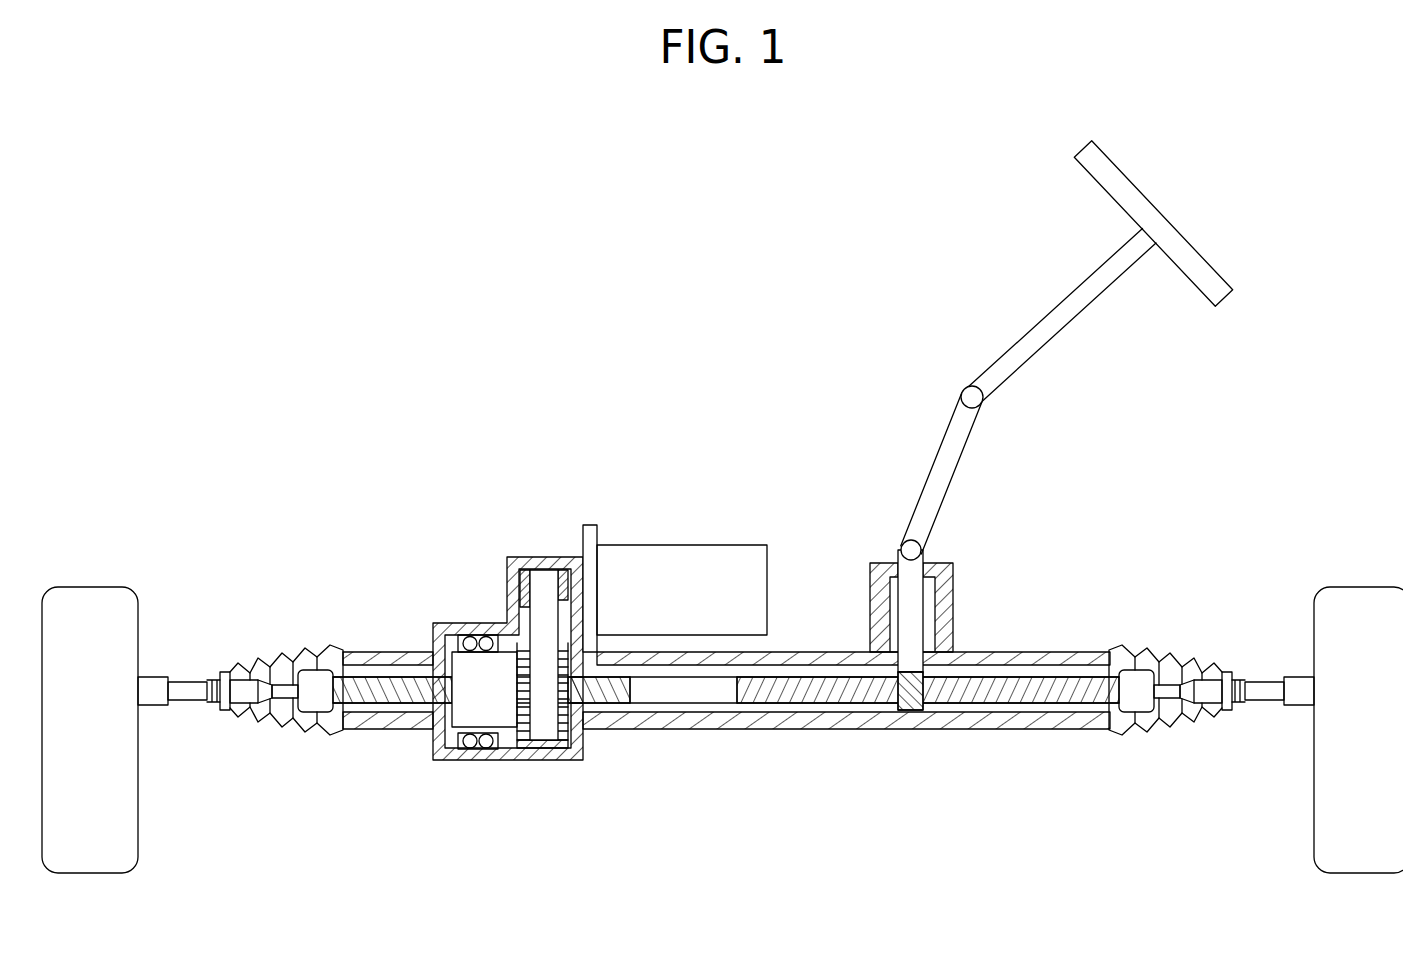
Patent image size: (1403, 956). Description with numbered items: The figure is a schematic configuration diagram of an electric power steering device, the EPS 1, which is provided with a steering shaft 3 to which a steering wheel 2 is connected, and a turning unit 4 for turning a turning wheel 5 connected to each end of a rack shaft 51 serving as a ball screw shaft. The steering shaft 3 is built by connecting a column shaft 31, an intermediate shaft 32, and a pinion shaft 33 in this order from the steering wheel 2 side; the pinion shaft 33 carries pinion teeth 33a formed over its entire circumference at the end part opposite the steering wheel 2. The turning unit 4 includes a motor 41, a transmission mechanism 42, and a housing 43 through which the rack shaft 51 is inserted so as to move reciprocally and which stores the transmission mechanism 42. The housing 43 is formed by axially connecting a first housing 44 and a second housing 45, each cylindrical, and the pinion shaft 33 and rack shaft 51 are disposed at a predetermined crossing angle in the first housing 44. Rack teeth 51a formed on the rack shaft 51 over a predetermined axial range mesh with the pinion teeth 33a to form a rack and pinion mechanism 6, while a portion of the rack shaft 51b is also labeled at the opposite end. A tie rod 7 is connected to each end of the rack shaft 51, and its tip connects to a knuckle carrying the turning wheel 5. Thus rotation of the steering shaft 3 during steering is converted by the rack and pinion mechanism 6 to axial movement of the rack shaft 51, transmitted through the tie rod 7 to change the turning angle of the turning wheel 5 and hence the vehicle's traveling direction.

The electric power steering device 1 is at (553, 302).
The steering wheel 2 is at (1160, 210).
The steering shaft 3 is at (975, 506).
The column shaft 31 is at (987, 362).
The intermediate shaft 32 is at (937, 450).
The pinion shaft 33 is at (897, 629).
The pinion teeth 33a is at (908, 712).
The turning unit 4 is at (579, 604).
The motor 41 is at (680, 545).
The transmission mechanism 42 is at (438, 607).
The housing 43 is at (534, 603).
The first housing 44 is at (550, 621).
The second housing 45 is at (524, 556).
The turning wheel 5 is at (92, 587).
The rack shaft 51 is at (680, 705).
The rack teeth 51a is at (1025, 705).
The second rack end portion 51b is at (393, 712).
The rack and pinion mechanism 6 is at (895, 712).
The tie rod 7 is at (183, 682).